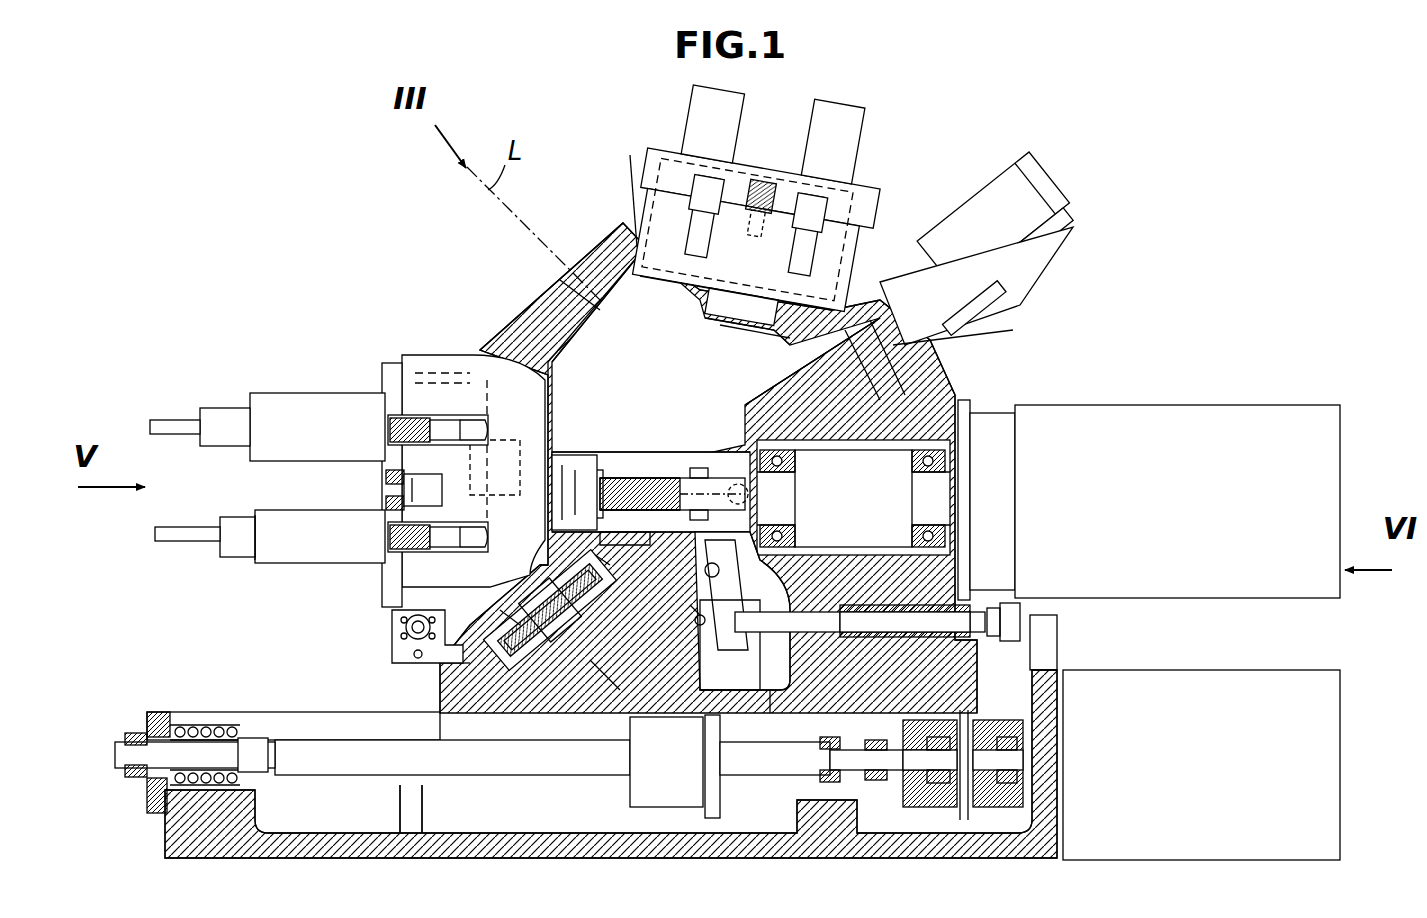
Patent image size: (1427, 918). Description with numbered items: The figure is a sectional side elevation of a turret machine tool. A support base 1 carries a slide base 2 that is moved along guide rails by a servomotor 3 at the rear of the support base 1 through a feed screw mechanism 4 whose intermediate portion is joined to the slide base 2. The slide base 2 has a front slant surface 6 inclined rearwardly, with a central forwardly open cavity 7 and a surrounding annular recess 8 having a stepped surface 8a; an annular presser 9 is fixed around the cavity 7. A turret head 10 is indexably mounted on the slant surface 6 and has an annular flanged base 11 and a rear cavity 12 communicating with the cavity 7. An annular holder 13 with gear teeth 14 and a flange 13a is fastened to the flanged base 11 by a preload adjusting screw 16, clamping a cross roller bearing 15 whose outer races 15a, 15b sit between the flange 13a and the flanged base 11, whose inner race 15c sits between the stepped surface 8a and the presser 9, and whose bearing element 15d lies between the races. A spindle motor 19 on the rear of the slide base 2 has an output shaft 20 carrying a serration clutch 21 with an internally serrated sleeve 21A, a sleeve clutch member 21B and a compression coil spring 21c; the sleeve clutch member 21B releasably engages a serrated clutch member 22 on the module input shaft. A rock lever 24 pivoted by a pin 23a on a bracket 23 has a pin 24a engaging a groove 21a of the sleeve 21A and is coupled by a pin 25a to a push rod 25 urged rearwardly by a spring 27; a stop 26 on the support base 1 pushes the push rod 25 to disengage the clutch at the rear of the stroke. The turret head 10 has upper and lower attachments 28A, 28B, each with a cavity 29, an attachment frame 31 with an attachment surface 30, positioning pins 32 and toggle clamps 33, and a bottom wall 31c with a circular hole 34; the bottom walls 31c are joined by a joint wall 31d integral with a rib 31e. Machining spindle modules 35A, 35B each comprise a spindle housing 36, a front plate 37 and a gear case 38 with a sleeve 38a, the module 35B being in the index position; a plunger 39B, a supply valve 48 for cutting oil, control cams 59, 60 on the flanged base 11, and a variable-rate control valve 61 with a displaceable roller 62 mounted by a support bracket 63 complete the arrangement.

The support base 1 is at (830, 862).
The slide base 2 is at (871, 765).
The servomotor 3 is at (1255, 670).
The feed screw mechanism 4 is at (548, 770).
The front slant surface 6 is at (780, 380).
The cavity 7 is at (675, 766).
The annular recess 8 is at (496, 705).
The stepped surface 8a is at (830, 395).
The annular presser 9 is at (820, 310).
The turret head 10 is at (578, 245).
The annular flanged base 11 is at (470, 640).
The cavity 12 is at (560, 300).
The annular holder 13 is at (975, 365).
The flange 13a is at (885, 395).
The gear teeth 14 is at (975, 330).
The cross roller bearing 15 is at (545, 650).
The upper outer race 15a is at (600, 655).
The lower outer race 15b is at (505, 610).
The inner race 15c is at (700, 612).
The bearing element 15d is at (605, 560).
The preload adjusting screw 16 is at (500, 625).
The spindle motor 19 is at (1200, 405).
The output shaft 20 is at (1000, 478).
The serration clutch 21 is at (652, 440).
The internally serrated sleeve 21A is at (615, 470).
The sleeve clutch member 21B is at (630, 535).
The groove 21a is at (690, 450).
The compression coil spring 21c is at (598, 470).
The serrated clutch member 22 is at (568, 455).
The bracket 23 is at (735, 645).
The pin 23a is at (700, 575).
The rock lever 24 is at (730, 550).
The pin 24a is at (725, 480).
The push rod 25 is at (985, 615).
The pin 25a is at (752, 620).
The stop 26 is at (1045, 625).
The spring 27 is at (770, 645).
The upper attachment 28A is at (640, 147).
The lower attachment 28B is at (435, 350).
The cavity 29 is at (500, 365).
The attachment surface 30 is at (642, 150).
The attachment frame 31 is at (630, 158).
The bottom wall 31c is at (655, 325).
The joint wall 31d is at (615, 320).
The rib 31e is at (565, 280).
The positioning pins 32 is at (385, 486).
The toggle clamps 33 is at (420, 430).
The circular hole 34 is at (500, 455).
The machining spindle module 35A is at (876, 100).
The machining spindle module 35B is at (292, 335).
The spindle housing 36 is at (282, 550).
The front plate 37 is at (390, 580).
The gear case 38 is at (410, 575).
The sleeve 38a is at (510, 490).
The plunger 39B is at (172, 420).
The supply valve 48 is at (395, 632).
The control cam 59 is at (900, 275).
The control cam 60 is at (462, 705).
The variable-rate control valve 61 is at (1005, 160).
The displaceable roller 62 is at (920, 262).
The support bracket 63 is at (1030, 275).